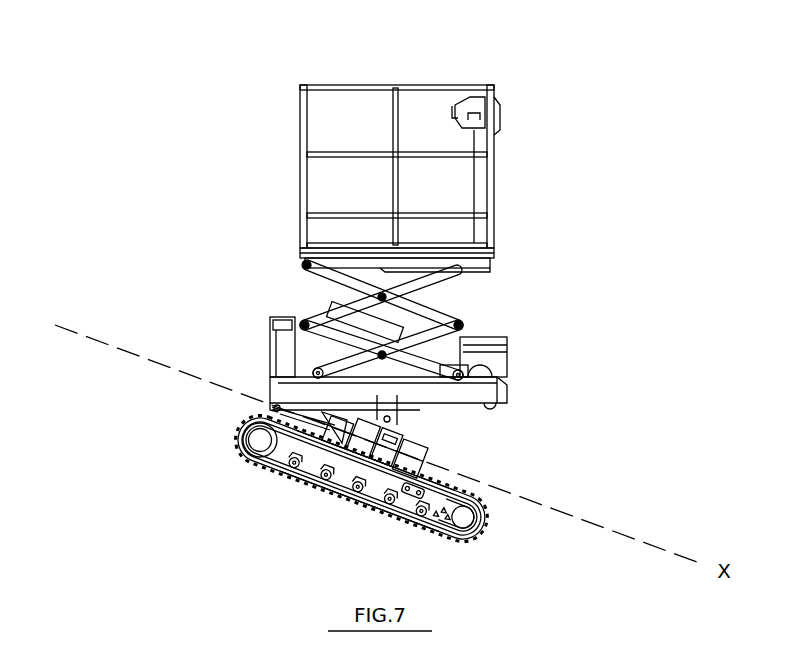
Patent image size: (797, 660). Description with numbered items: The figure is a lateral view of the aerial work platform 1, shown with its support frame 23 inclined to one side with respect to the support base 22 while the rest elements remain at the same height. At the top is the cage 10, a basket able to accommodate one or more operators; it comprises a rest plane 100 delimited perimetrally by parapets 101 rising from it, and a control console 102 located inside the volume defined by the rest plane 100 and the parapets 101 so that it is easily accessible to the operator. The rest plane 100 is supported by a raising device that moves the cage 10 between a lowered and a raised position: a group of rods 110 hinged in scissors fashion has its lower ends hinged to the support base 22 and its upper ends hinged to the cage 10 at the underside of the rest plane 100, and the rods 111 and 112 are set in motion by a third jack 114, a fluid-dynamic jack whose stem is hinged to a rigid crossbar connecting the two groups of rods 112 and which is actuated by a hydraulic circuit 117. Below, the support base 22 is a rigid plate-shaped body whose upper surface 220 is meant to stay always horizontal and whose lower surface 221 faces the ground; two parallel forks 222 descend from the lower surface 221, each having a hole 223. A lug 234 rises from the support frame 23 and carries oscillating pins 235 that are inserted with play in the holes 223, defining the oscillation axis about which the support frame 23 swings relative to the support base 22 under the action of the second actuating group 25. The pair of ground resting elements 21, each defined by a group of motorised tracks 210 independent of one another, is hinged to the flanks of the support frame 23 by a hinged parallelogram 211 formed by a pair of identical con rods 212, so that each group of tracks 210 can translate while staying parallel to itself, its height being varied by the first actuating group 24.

The aerial work platform 1 is at (88, 100).
The cage 10 is at (300, 118).
The rest plane 100 is at (468, 247).
The parapets 101 is at (357, 87).
The control console 102 is at (475, 113).
The group of rods 110 is at (490, 272).
The scissor arm 111 is at (306, 263).
The groups of rods 112 is at (303, 318).
The third jack 114 is at (352, 320).
The hydraulic circuit 117 is at (508, 342).
The support base 22 is at (292, 394).
The upper surface 220 is at (510, 368).
The lower surface 221 is at (510, 405).
The forks 222 is at (398, 417).
The hole 223 is at (250, 443).
The support frame 23 is at (253, 462).
The lug 234 is at (400, 428).
The oscillating pins 235 is at (270, 404).
The second actuating group 25 is at (255, 417).
The ground resting elements 21 is at (293, 480).
The hinged parallelogram 211 is at (350, 452).
The con rods 212 is at (420, 443).
The first actuating group 24 is at (412, 492).
The group of motorised tracks 210 is at (478, 537).